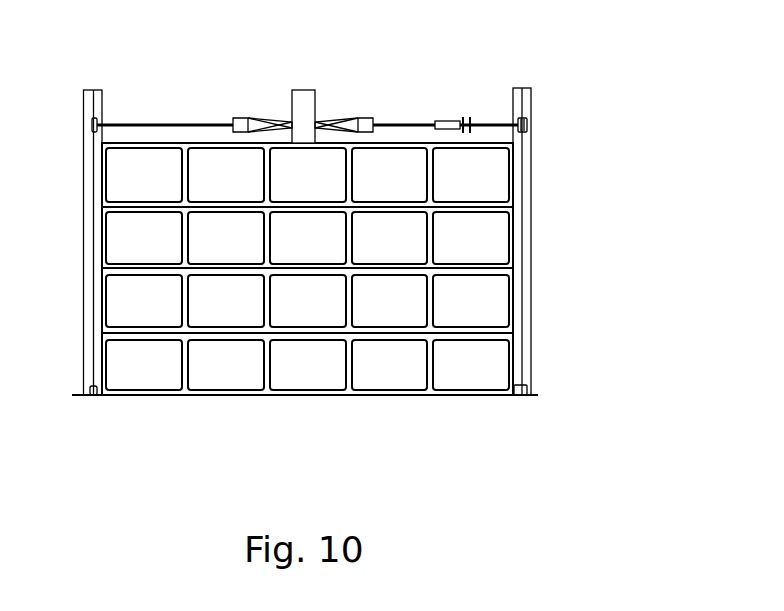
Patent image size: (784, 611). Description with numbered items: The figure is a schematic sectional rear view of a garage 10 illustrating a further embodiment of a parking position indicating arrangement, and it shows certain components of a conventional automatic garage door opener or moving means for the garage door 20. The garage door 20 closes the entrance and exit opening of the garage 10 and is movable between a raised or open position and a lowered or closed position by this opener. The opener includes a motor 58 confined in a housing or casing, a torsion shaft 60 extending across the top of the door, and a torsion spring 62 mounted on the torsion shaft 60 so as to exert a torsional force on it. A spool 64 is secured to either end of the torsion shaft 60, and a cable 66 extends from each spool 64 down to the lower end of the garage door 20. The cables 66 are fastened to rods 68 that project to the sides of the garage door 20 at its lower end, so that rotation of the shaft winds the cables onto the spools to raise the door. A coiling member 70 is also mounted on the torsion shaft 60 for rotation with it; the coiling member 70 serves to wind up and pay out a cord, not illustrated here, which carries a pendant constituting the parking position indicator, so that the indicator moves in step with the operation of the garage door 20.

The garage 10 is at (559, 53).
The garage door 20 is at (453, 396).
The motor 58 is at (282, 90).
The torsion shaft 60 is at (160, 125).
The torsion spring 62 is at (360, 117).
The spool 64 is at (93, 89).
The cable 66 is at (93, 358).
The rod 68 is at (93, 400).
The coiling member 70 is at (467, 120).